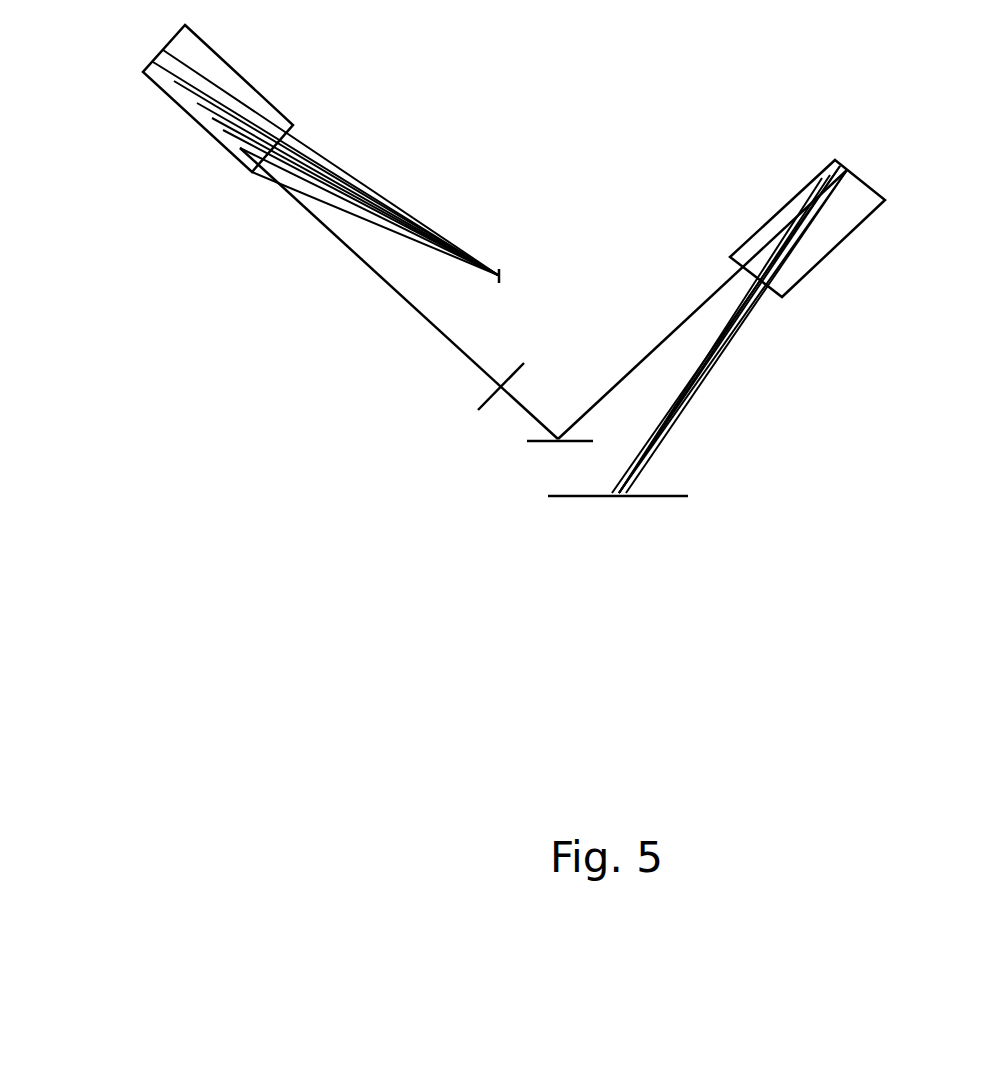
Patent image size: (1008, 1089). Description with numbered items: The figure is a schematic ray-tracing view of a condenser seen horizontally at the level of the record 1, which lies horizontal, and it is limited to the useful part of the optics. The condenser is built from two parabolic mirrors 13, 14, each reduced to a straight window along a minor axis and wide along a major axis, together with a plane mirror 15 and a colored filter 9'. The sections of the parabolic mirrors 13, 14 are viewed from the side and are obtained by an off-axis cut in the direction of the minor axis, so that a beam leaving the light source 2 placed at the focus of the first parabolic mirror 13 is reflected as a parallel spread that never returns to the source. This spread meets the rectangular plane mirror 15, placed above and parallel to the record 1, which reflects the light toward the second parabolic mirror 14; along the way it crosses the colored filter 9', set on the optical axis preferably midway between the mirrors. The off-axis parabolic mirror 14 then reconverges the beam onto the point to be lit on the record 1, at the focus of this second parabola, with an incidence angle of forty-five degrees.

The record 1 is at (667, 492).
The light source 2 is at (493, 287).
The colored filter 9' is at (440, 416).
The parabolic mirror 13 is at (183, 108).
The parabolic mirror 14 is at (831, 156).
The plane mirror 15 is at (538, 445).